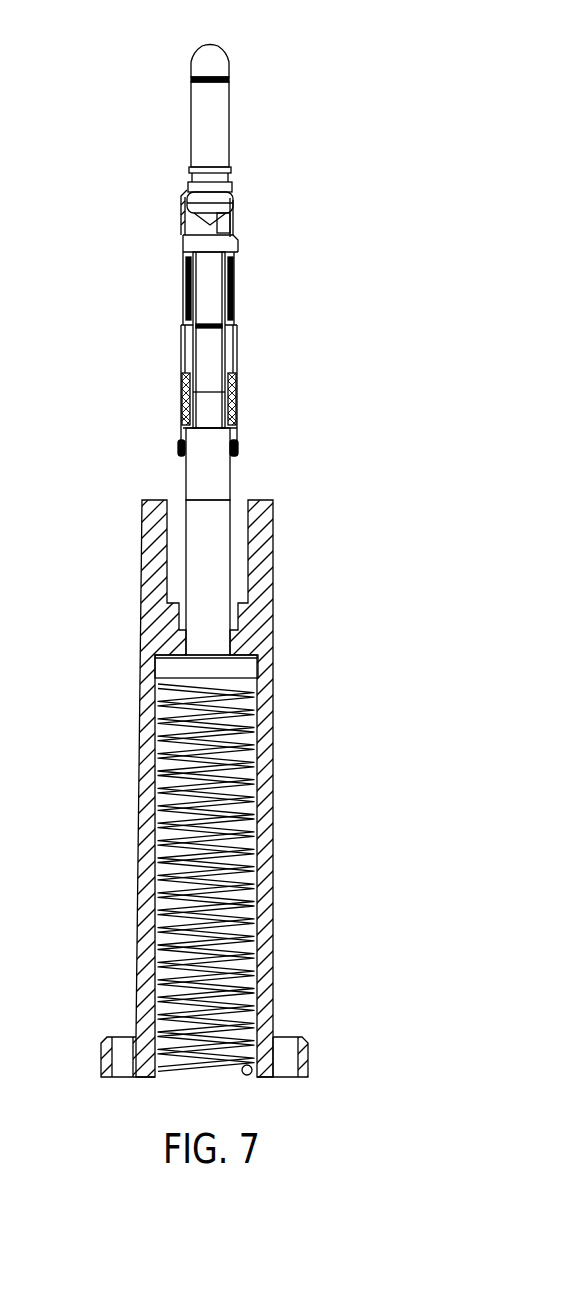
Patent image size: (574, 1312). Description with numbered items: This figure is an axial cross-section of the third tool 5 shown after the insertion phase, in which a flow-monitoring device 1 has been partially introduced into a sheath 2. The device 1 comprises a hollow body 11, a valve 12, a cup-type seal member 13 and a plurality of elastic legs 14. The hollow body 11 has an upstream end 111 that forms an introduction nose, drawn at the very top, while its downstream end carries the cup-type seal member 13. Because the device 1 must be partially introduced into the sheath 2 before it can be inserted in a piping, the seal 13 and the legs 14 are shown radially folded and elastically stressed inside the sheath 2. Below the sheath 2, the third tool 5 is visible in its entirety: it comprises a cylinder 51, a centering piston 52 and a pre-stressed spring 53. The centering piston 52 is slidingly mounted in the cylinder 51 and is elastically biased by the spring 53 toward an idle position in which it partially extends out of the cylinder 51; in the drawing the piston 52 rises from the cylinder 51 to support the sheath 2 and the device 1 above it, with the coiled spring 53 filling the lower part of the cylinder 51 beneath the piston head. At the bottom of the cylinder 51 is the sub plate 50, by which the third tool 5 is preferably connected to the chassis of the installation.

The flow-monitoring device 1 is at (146, 196).
The upstream end 111 is at (210, 65).
The valve 12 is at (250, 213).
The elastic legs 14 is at (233, 303).
The hollow body 11 is at (210, 352).
The cup-type seal member 13 is at (182, 410).
The sheath 2 is at (238, 433).
The third tool 5 is at (121, 713).
The cylinder 51 is at (153, 542).
The centering piston 52 is at (213, 552).
The pre-stressed spring 53 is at (247, 897).
The sub plate 50 is at (103, 1050).